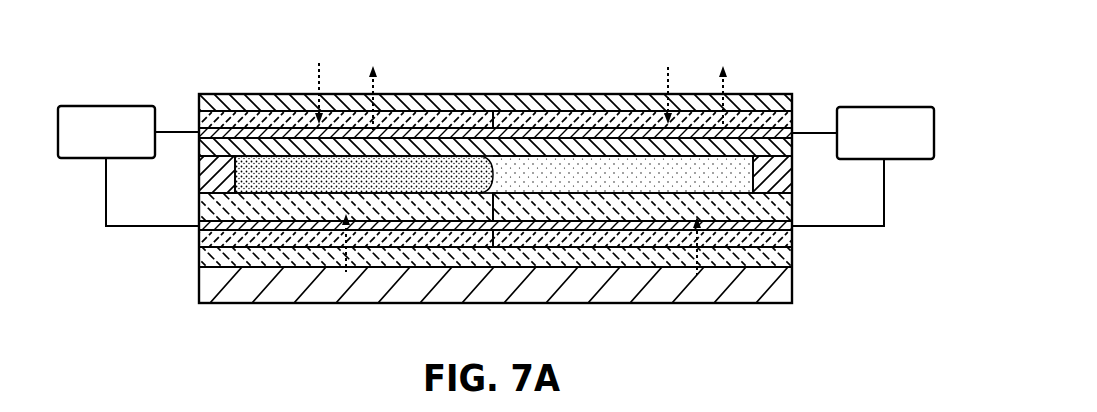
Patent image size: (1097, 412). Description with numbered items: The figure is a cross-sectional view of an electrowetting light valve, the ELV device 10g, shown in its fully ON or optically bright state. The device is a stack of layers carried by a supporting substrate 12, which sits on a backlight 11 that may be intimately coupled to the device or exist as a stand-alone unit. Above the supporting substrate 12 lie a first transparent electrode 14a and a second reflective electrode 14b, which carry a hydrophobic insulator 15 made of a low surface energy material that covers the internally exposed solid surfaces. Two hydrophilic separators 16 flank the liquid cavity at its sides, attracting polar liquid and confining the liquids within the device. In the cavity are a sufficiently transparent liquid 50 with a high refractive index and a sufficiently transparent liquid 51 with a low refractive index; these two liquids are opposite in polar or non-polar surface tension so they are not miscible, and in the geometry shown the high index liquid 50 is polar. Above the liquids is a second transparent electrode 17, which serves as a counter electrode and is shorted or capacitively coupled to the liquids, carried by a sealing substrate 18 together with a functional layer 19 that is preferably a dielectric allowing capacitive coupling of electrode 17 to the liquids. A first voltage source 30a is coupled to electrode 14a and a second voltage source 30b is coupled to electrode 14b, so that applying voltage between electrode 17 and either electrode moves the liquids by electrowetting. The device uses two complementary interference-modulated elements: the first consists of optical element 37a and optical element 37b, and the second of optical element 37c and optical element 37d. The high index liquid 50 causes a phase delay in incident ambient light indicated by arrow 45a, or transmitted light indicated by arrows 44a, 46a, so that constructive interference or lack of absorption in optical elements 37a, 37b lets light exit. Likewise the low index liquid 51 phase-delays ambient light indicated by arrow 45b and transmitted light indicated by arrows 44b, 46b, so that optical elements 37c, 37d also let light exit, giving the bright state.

The ELV device 10g is at (782, 37).
The backlight 11 is at (792, 287).
The supporting substrate 12 is at (206, 257).
The first transparent electrode 14a is at (206, 218).
The second reflective electrode 14b is at (792, 205).
The hydrophobic insulator 15 is at (268, 213).
The hydrophilic separator 16 is at (206, 173).
The second transparent electrode 17 is at (778, 140).
The sealing substrate 18 is at (199, 102).
The functional layer 19 is at (235, 147).
The first voltage source 30a is at (883, 107).
The second voltage source 30b is at (107, 106).
The optical element 37a is at (199, 118).
The optical element 37b is at (206, 238).
The optical element 37c is at (792, 120).
The optical element 37d is at (792, 240).
The arrow 44a is at (355, 258).
The arrow 44b is at (705, 253).
The arrow 45a is at (318, 72).
The arrow 45b is at (666, 73).
The arrow 46a is at (375, 78).
The arrow 46b is at (726, 80).
The high refractive index liquid 50 is at (492, 175).
The low refractive index liquid 51 is at (678, 175).